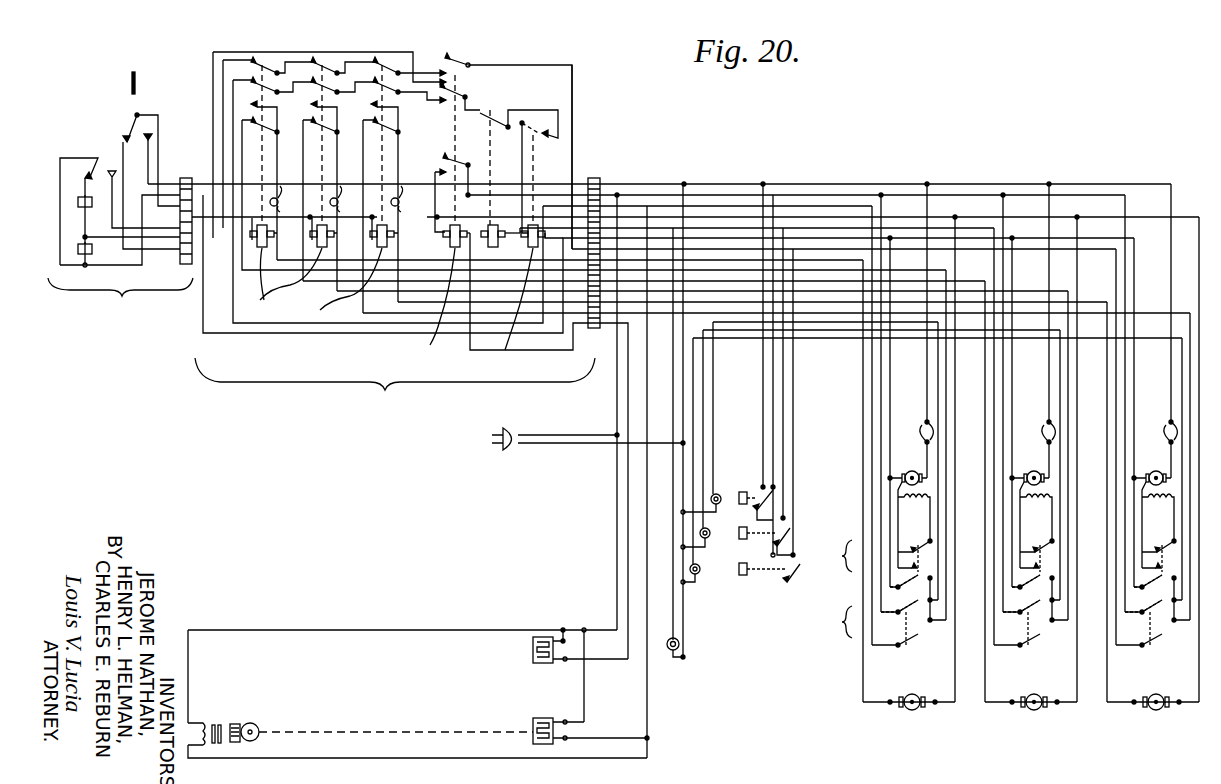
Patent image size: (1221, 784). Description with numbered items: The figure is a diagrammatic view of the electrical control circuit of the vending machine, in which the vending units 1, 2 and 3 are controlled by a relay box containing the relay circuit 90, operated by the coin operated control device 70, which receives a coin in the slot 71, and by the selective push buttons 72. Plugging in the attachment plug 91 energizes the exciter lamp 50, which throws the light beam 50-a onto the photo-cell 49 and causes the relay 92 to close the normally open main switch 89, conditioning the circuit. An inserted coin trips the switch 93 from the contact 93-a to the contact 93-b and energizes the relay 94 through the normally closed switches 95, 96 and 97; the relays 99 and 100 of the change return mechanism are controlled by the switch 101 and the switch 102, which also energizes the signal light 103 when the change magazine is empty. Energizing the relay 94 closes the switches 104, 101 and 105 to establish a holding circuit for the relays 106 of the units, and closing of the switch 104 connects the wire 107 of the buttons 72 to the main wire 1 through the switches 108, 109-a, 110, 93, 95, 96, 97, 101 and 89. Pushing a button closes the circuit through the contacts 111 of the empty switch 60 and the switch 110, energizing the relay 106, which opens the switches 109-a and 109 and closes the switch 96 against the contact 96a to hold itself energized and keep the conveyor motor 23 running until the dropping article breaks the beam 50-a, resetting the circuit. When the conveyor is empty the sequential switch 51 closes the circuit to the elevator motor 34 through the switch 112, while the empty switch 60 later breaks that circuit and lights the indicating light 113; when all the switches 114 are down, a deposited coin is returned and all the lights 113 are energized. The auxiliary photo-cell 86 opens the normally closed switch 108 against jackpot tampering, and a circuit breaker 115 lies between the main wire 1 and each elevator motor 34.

The main wire 1 is at (562, 182).
The vending unit 2 is at (359, 171).
The vending unit 3 is at (324, 165).
The conveyor motor 23 is at (1150, 712).
The elevator motor 34 is at (890, 478).
The photosensitive element 49 is at (532, 722).
The exciter lamp 50 is at (247, 722).
The light beam 50-a is at (366, 730).
The sequential switch 51 is at (839, 556).
The empty switch 60 is at (838, 622).
The coin operated control device 70 is at (120, 296).
The slot 71 is at (136, 74).
The article selection buttons 72 is at (752, 490).
The auxiliary photo-cell 86 is at (532, 656).
The main control switch 89 is at (560, 116).
The relay circuit 90 is at (395, 387).
The attachment plug 91 is at (510, 450).
The relay 92 is at (515, 307).
The switch 93 is at (134, 115).
The contact 93-a is at (124, 142).
The contact 93-b is at (150, 140).
The relay 94 is at (406, 288).
The switch 95 is at (268, 92).
The switch 96 is at (330, 92).
The contact 96a is at (330, 126).
The switch 97 is at (395, 94).
The relay 99 is at (78, 204).
The relay 100 is at (78, 250).
The switch 101 is at (466, 95).
The switch 102 is at (78, 160).
The signal light 103 is at (680, 642).
The switch 104 is at (462, 60).
The switch 105 is at (454, 162).
The relay 106 is at (390, 187).
The wire 107 is at (574, 150).
The switch 108 is at (410, 55).
The switch 109 is at (316, 126).
The switch 109-a is at (325, 60).
The switch 110 is at (262, 62).
The contacts 111 is at (920, 648).
The switch 112 is at (922, 572).
The indicating lights 113 is at (710, 504).
The switches 114 is at (920, 608).
The circuit breaker 115 is at (924, 436).